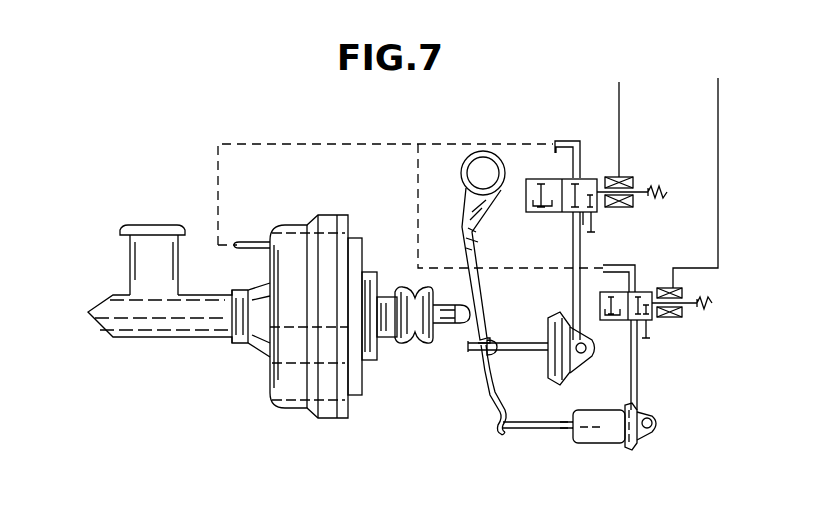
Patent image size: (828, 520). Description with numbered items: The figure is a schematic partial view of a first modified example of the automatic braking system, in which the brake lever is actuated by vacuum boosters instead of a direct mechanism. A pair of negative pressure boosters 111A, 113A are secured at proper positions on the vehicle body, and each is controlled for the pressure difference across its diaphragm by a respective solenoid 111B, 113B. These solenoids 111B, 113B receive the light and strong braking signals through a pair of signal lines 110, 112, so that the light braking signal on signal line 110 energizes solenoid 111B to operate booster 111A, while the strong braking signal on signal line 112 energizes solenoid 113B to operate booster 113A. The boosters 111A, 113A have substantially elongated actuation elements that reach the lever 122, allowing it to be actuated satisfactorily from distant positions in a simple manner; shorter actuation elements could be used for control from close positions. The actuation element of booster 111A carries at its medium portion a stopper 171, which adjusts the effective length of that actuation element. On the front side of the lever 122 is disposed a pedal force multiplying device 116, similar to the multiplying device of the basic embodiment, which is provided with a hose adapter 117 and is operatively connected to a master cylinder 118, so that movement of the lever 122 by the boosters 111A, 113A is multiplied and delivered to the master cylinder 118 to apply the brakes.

The signal line 110 is at (618, 107).
The signal line 112 is at (717, 108).
The negative pressure booster 111A is at (553, 378).
The solenoid 111B is at (622, 207).
The negative pressure booster 113A is at (620, 444).
The solenoid 113B is at (673, 320).
The pedal force multiplying device 116 is at (331, 209).
The hose adapter 117 is at (253, 242).
The master cylinder 118 is at (162, 337).
The lever 122 is at (488, 393).
The stopper 171 is at (485, 343).